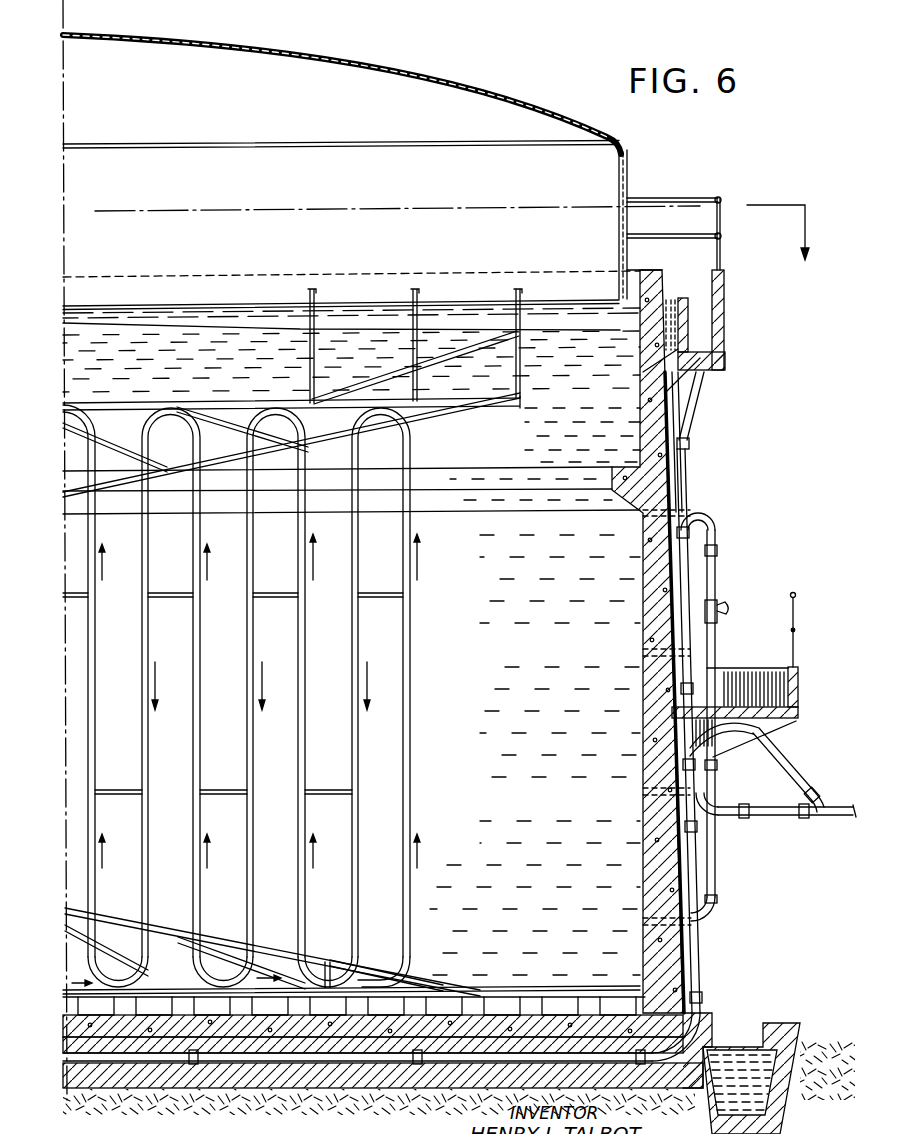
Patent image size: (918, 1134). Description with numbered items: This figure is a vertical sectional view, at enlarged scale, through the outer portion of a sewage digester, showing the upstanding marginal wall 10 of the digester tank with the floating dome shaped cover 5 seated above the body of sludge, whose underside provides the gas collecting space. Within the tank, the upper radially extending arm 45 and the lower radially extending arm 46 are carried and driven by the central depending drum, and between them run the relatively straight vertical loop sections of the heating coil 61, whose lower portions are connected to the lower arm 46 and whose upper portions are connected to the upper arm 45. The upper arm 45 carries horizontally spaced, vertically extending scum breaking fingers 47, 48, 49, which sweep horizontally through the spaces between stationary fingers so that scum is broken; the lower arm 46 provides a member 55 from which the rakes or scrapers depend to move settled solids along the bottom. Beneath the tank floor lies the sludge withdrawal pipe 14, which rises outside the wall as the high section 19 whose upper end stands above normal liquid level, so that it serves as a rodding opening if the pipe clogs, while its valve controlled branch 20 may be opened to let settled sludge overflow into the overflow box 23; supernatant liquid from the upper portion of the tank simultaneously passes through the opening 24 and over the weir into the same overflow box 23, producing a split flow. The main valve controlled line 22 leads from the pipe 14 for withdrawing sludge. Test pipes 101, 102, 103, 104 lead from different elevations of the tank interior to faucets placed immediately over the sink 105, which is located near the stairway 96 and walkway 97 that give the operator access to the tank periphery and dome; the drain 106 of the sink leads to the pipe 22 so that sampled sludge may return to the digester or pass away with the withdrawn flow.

The floating dome shaped cover 5 is at (222, 48).
The upstanding marginal wall 10 is at (643, 597).
The sludge withdrawal pipe 14 is at (475, 1060).
The high section 19 is at (679, 497).
The valve controlled branch 20 is at (696, 403).
The main valve controlled line 22 is at (765, 814).
The overflow box 23 is at (697, 336).
The opening 24 is at (653, 382).
The upper radially extending arm 45 is at (453, 411).
The lower radially extending arm 46 is at (418, 977).
The scum breaking finger 47 is at (307, 291).
The scum breaking finger 48 is at (413, 292).
The scum breaking finger 49 is at (517, 290).
The member 55 is at (444, 988).
The heating coil 61 is at (94, 748).
The stairway 96 is at (795, 658).
The walkway 97 is at (720, 247).
The test pipe 101 is at (645, 922).
The test pipe 102 is at (645, 789).
The test pipe 103 is at (644, 651).
The test pipe 104 is at (644, 512).
The sink 105 is at (738, 671).
The drain 106 is at (798, 778).